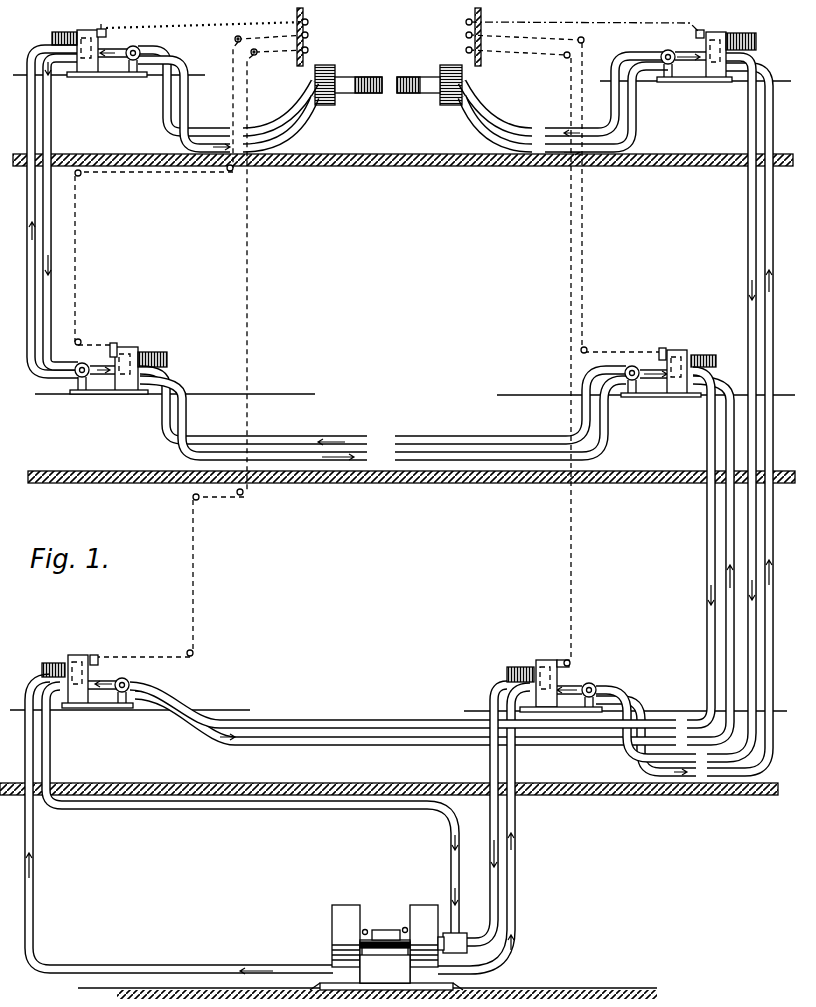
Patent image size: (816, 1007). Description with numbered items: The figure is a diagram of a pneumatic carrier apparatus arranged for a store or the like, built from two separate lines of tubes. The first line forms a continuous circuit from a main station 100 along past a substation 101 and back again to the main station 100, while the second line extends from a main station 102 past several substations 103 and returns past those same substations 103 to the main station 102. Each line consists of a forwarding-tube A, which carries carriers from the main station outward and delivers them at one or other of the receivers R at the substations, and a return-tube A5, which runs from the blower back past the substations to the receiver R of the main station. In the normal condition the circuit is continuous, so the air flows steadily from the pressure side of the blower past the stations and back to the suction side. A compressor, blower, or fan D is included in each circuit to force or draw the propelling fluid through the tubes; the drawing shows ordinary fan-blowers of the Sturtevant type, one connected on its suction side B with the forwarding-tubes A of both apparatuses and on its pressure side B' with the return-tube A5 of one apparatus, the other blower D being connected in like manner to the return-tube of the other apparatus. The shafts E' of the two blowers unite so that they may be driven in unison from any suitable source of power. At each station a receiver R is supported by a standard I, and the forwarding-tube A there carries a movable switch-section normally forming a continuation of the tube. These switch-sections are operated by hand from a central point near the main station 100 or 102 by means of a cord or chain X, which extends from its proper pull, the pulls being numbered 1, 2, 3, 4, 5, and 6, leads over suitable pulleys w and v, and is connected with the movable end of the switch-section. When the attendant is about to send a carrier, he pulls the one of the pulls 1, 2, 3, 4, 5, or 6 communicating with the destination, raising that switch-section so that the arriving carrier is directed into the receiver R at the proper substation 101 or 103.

The forwarding-tube A is at (52, 226).
The return-tube A5 is at (524, 958).
The standard I is at (50, 37).
The receiver R is at (66, 33).
The pulley w is at (662, 349).
The cord or chain X is at (172, 28).
The pulley v is at (234, 39).
The pull 1 is at (313, 22).
The pull 2 is at (313, 36).
The pull 3 is at (313, 51).
The pull 4 is at (462, 22).
The pull 5 is at (462, 36).
The pull 6 is at (462, 51).
The main station 100 is at (695, 103).
The substation 101 is at (625, 677).
The main station 102 is at (109, 96).
The substation 103 is at (402, 499).
The blower D is at (385, 922).
The suction side of the blower B is at (388, 939).
The pressure side of the blower B' is at (356, 965).
The blower shaft E' is at (384, 925).